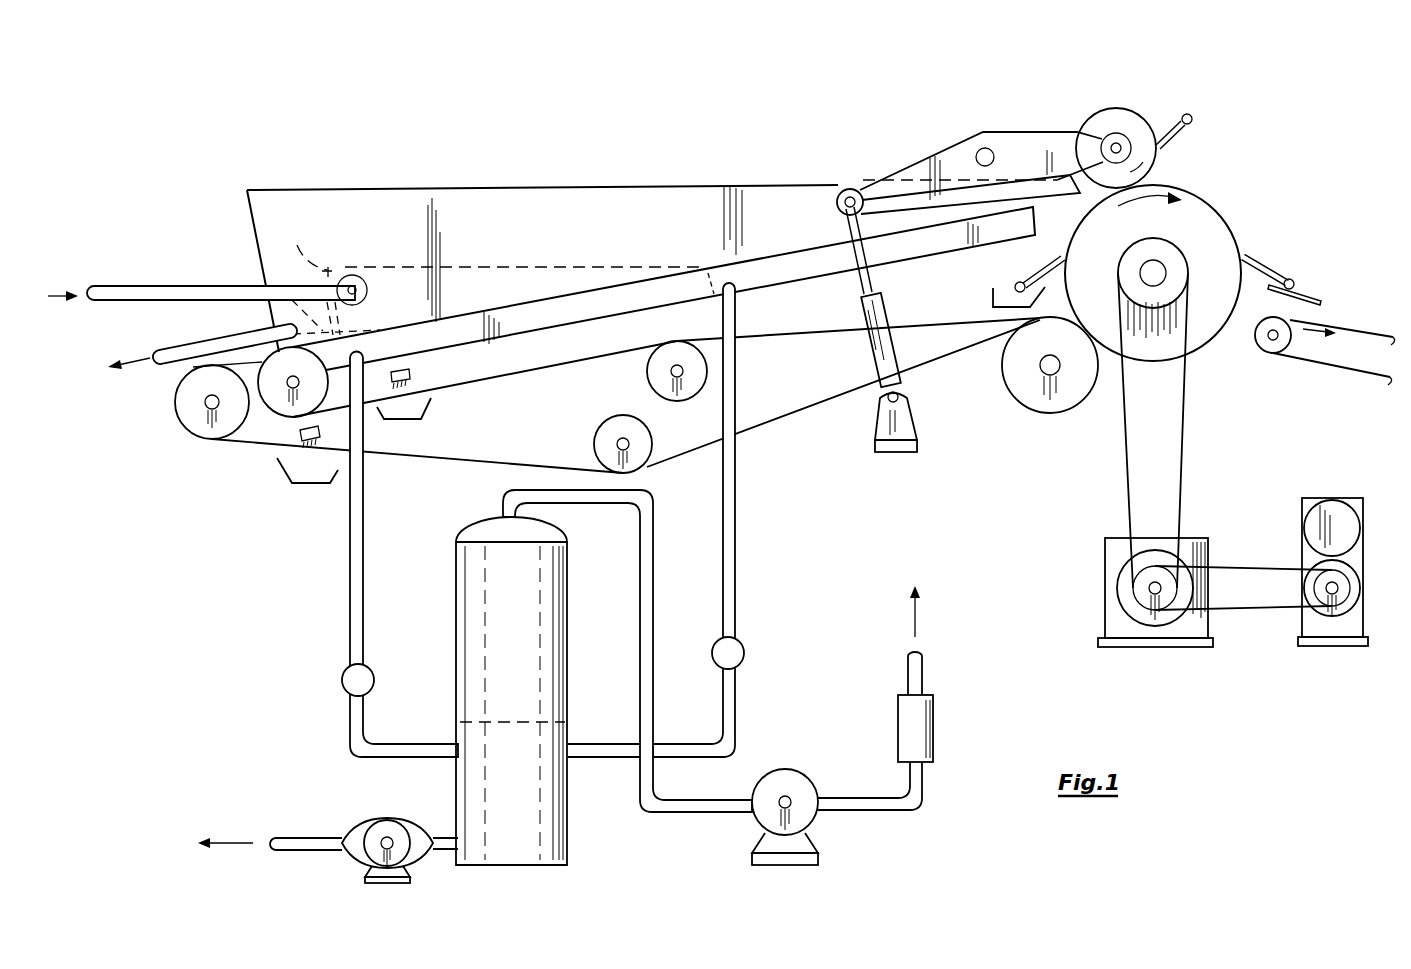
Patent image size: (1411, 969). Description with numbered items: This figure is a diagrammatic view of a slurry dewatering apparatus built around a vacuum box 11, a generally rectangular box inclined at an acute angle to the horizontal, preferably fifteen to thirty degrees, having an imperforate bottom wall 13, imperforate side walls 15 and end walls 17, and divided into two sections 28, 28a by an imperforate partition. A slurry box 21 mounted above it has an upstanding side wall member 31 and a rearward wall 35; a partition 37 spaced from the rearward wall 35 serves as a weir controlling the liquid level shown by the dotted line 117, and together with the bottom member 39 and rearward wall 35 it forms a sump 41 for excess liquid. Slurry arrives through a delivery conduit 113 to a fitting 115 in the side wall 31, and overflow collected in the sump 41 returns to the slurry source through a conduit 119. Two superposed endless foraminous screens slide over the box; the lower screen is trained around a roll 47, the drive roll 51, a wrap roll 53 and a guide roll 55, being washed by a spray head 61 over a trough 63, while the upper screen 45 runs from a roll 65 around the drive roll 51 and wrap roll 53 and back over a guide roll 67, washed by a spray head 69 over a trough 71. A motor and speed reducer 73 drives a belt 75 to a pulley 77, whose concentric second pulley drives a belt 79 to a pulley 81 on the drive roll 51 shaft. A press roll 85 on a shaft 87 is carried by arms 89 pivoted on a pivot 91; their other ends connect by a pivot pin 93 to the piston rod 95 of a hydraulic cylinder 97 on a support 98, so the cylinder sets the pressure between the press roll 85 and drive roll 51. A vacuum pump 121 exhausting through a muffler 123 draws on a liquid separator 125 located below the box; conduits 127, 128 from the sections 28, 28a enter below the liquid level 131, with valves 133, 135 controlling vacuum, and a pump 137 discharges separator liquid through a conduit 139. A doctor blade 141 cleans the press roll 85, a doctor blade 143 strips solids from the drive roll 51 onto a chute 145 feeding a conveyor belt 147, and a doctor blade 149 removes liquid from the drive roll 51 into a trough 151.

The vacuum box 11 is at (821, 274).
The bottom wall 13 is at (538, 337).
The side walls 15 is at (825, 262).
The end walls 17 is at (320, 350).
The slurry box 21 is at (503, 242).
The section 28 is at (478, 328).
The section 28a is at (947, 238).
The side wall member 31 is at (388, 185).
The rearward wall 35 is at (250, 222).
The partition 37 is at (307, 250).
The bottom member 39 is at (263, 317).
The sump 41 is at (265, 282).
The upper screen 45 is at (430, 463).
The roll 47 is at (283, 402).
The drive roll 51 is at (1198, 330).
The wrap roll 53 is at (1051, 387).
The guide roll 55 is at (672, 386).
The spray head 61 is at (410, 375).
The trough 63 is at (417, 419).
The roll 65 is at (188, 404).
The guide roll 67 is at (603, 439).
The spray head 69 is at (298, 435).
The trough 71 is at (306, 485).
The motor and speed reducer 73 is at (1300, 556).
The belt 75 is at (1254, 607).
The pulley 77 is at (1151, 598).
The belt 79 is at (1185, 490).
The pulley 81 is at (1168, 260).
The press roll 85 is at (1138, 122).
The shaft 87 is at (1115, 138).
The arms 89 is at (917, 167).
The pivot 91 is at (987, 147).
The pivot pin 93 is at (851, 188).
The piston rod 95 is at (877, 279).
The hydraulic cylinder 97 is at (900, 347).
The support 98 is at (910, 418).
The delivery conduit 113 is at (150, 273).
The fitting 115 is at (368, 287).
The dotted line 117 is at (378, 264).
The conduit 119 is at (178, 352).
The vacuum pump 121 is at (792, 780).
The muffler 123 is at (935, 724).
The liquid separator 125 is at (457, 633).
The conduit 127 is at (348, 580).
The conduit 128 is at (645, 587).
The liquid level 131 is at (548, 720).
The valve 133 is at (375, 680).
The valve 135 is at (750, 655).
The pump 137 is at (393, 828).
The conduit 139 is at (303, 837).
The doctor blade 141 is at (1172, 143).
The doctor blade 143 is at (1267, 263).
The chute 145 is at (1303, 290).
The conveyor belt 147 is at (1342, 325).
The doctor blade 149 is at (1043, 273).
The trough 151 is at (992, 299).